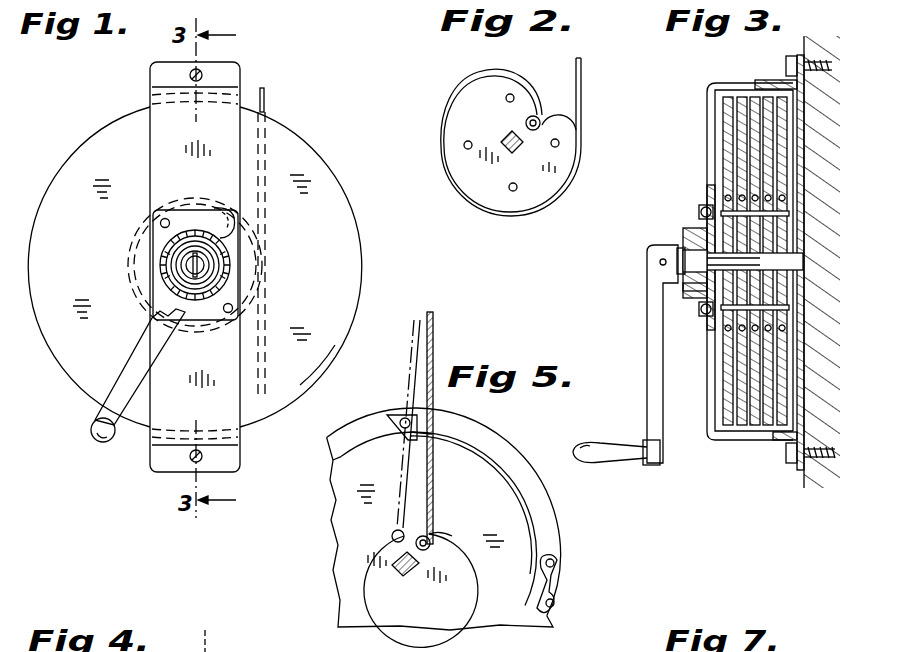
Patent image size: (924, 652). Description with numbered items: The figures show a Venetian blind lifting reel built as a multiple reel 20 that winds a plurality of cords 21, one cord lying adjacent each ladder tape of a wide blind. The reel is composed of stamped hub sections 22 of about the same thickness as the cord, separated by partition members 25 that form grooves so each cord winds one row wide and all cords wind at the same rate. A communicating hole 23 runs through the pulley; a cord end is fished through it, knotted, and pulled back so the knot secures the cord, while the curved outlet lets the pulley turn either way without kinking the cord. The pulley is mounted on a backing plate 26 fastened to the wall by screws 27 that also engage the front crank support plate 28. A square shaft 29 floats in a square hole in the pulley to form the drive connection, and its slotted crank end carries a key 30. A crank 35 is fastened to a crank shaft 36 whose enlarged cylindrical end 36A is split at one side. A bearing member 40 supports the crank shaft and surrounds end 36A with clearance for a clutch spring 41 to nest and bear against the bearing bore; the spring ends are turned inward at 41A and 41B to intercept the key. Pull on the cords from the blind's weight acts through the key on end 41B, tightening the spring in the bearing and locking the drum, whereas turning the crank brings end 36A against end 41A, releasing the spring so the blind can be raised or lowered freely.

In FIG. 1, the multiple reel 20 is at (332, 193).
In FIG. 3, the multiple reel 20 is at (724, 130).
In FIG. 1, the cords 21 is at (266, 99).
In FIG. 2, the cords 21 is at (583, 68).
In FIG. 3, the cords 21 is at (746, 335).
In FIG. 2, the hub sections 22 is at (485, 96).
In FIG. 3, the hub sections 22 is at (778, 208).
In FIG. 5, the hub sections 22 is at (368, 583).
In FIG. 1, the hole 23 is at (219, 207).
In FIG. 2, the hole 23 is at (526, 123).
In FIG. 5, the hole 23 is at (431, 546).
In FIG. 1, the partition members 25 is at (337, 336).
In FIG. 3, the backing plate 26 is at (793, 438).
In FIG. 1, the screws 27 is at (201, 71).
In FIG. 3, the screws 27 is at (788, 68).
In FIG. 1, the front crank support plate 28 is at (234, 408).
In FIG. 3, the front crank support plate 28 is at (707, 433).
In FIG. 3, the square shaft 29 is at (757, 259).
In FIG. 5, the square shaft 29 is at (402, 578).
In FIG. 1, the key 30 is at (186, 276).
In FIG. 3, the key 30 is at (690, 254).
In FIG. 1, the crank 35 is at (128, 374).
In FIG. 3, the crank 35 is at (648, 405).
In FIG. 3, the crank shaft 36 is at (681, 266).
In FIG. 1, the enlarged cylindrically shaped end 36A is at (206, 283).
In FIG. 3, the enlarged cylindrically shaped end 36A is at (688, 296).
In FIG. 3, the bearing member 40 is at (683, 241).
In FIG. 1, the clutch spring 41 is at (180, 283).
In FIG. 3, the clutch spring 41 is at (694, 229).
In FIG. 1, the spring end 41A is at (170, 258).
In FIG. 1, the spring end 41B is at (212, 262).